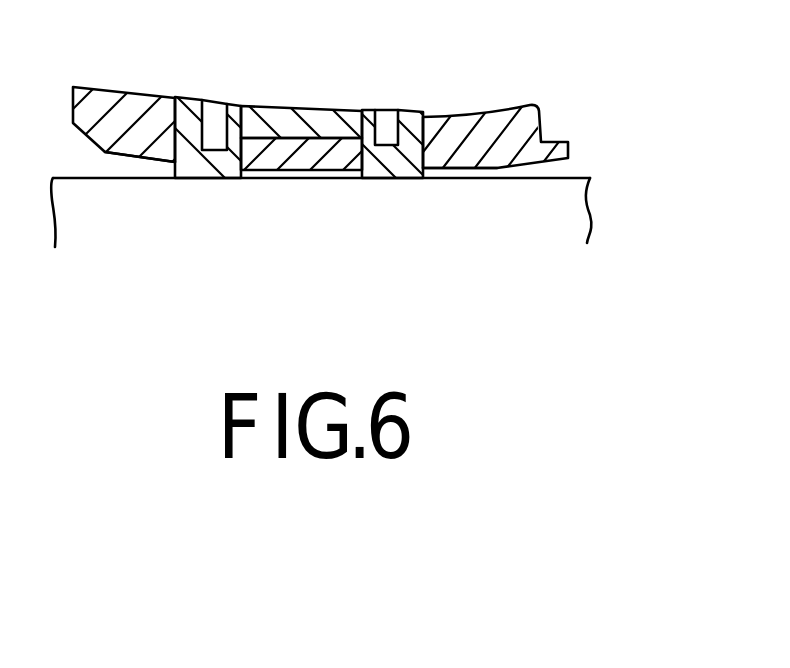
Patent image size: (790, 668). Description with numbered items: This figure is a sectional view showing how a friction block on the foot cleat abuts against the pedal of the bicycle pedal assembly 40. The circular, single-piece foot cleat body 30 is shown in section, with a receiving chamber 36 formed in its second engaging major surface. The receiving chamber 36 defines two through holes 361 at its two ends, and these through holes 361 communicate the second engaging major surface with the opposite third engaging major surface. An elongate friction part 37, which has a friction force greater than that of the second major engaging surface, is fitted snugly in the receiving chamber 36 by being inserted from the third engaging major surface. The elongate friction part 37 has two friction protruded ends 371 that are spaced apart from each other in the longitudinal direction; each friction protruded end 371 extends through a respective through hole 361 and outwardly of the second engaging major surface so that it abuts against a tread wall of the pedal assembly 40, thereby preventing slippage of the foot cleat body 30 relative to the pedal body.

The foot cleat body 30 is at (505, 52).
The receiving chamber 36 is at (303, 275).
The elongate friction part 37 is at (317, 50).
The through hole 361 is at (120, 263).
The friction protruded end 371 is at (193, 268).
The bicycle pedal assembly 40 is at (647, 172).